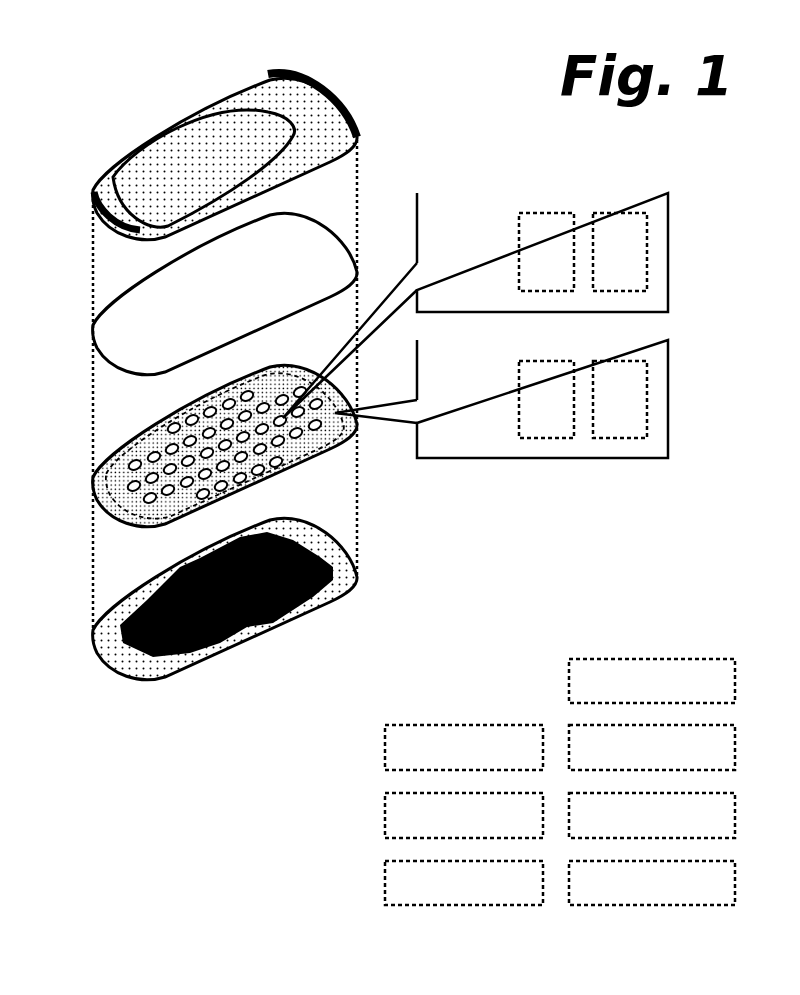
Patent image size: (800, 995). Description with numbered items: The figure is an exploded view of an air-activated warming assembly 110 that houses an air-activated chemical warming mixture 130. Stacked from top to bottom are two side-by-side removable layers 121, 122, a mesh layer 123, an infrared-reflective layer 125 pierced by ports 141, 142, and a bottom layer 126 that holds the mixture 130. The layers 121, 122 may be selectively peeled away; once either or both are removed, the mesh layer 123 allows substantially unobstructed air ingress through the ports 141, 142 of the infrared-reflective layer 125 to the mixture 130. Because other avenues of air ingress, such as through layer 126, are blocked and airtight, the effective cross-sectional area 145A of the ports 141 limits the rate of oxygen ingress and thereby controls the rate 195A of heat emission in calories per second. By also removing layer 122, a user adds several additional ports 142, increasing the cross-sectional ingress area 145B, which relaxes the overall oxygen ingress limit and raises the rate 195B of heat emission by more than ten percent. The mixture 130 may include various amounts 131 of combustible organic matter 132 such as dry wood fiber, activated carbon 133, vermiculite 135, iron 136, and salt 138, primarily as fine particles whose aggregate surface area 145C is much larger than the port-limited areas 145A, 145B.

The assembly 110 is at (86, 745).
The layer 121 is at (115, 197).
The layer 122 is at (352, 125).
The mesh layer 123 is at (235, 310).
The infrared-reflective layer 125 is at (343, 447).
The layer 126 is at (431, 731).
The air-activated chemical warming mixture 130 is at (347, 750).
The amounts 131 is at (464, 747).
The combustible organic matter 132 is at (464, 815).
The activated carbon 133 is at (464, 883).
The vermiculite 135 is at (652, 681).
The iron 136 is at (652, 747).
The salt 138 is at (652, 815).
The ports 141 is at (475, 305).
The additional ports 142 is at (501, 399).
The effective area of ports 145A is at (546, 252).
The cross-sectional ingress area 145B is at (546, 399).
The aggregate surface area 145C is at (652, 883).
The rate of heat emission 195A is at (620, 252).
The increased rate of heat emission 195B is at (620, 399).